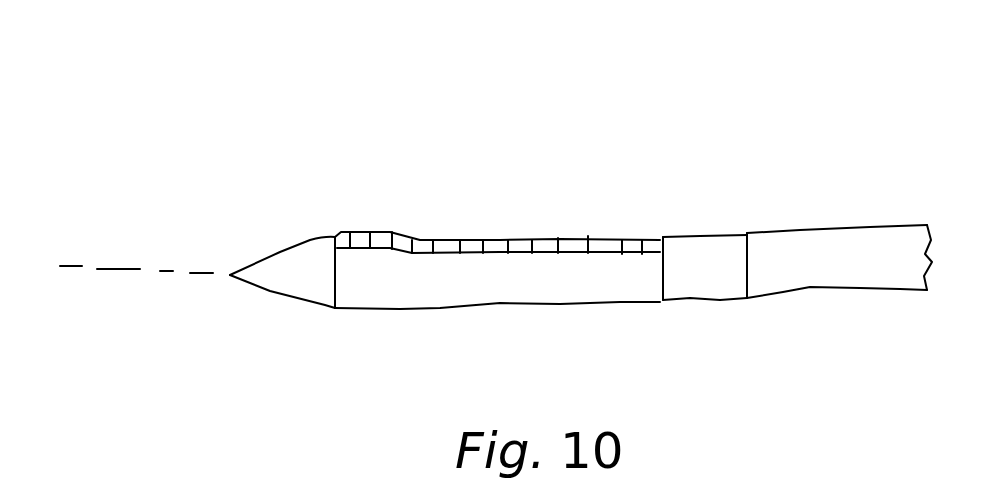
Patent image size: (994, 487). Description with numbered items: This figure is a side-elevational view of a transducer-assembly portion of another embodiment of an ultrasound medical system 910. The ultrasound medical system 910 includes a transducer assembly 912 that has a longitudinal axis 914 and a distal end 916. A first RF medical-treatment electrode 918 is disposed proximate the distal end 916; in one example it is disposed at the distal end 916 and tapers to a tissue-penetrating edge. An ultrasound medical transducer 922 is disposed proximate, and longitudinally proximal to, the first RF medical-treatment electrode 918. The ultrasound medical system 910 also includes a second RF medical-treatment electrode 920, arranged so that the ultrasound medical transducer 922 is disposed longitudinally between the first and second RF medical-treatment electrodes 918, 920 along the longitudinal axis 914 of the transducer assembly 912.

The ultrasound medical system 910 is at (470, 110).
The transducer assembly 912 is at (587, 180).
The longitudinal axis 914 is at (120, 267).
The distal end 916 is at (229, 278).
The first RF medical-treatment electrode 918 is at (303, 260).
The second RF medical-treatment electrode 920 is at (700, 252).
The ultrasound medical transducer 922 is at (476, 230).